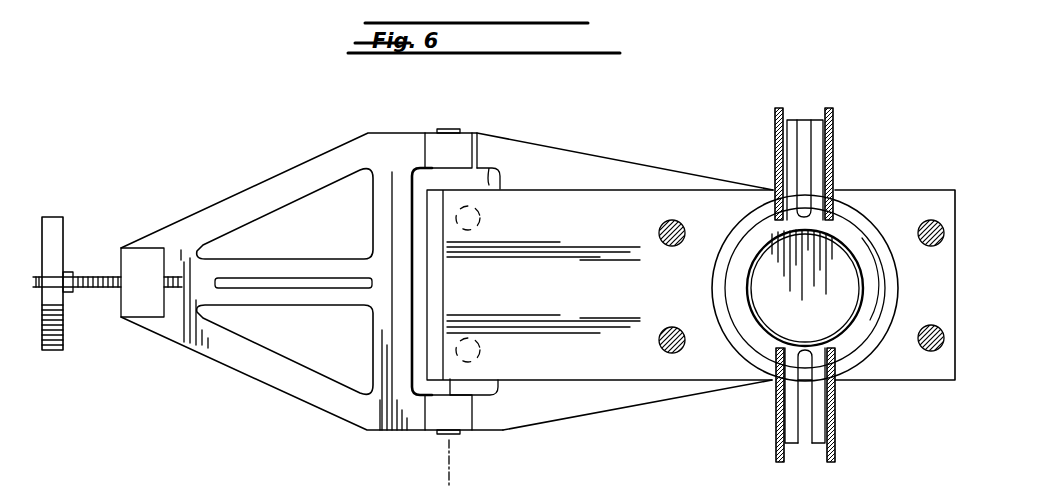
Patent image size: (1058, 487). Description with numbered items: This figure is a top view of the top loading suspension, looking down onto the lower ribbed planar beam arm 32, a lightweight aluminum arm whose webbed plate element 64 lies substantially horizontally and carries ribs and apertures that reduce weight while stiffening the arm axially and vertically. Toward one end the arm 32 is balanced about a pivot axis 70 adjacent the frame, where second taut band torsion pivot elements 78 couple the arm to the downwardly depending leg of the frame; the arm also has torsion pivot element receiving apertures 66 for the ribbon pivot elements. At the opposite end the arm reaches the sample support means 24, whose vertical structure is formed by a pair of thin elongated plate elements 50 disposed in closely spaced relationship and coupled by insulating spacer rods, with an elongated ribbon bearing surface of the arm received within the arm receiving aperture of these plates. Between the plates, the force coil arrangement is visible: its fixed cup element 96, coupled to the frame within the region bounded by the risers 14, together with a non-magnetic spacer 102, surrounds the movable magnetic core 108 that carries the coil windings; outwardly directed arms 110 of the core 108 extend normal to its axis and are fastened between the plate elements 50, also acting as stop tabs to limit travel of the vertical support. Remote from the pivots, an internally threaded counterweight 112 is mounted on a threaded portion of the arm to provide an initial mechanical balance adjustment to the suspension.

The risers 14 is at (931, 219).
The sample support means 24 is at (846, 175).
The lower ribbed planar beam arm 32 is at (632, 154).
The thin elongated plate elements 50 is at (830, 108).
The webbed plate elements 64 is at (294, 168).
The torsion pivot element receiving apertures 66 is at (488, 168).
The pivot axis 70 is at (449, 480).
The second taut band torsion pivot elements 78 is at (442, 180).
The cup elements 96 is at (753, 206).
The non-magnetic spacer 102 is at (782, 318).
The magnetic core 108 is at (847, 340).
The outwardly directed arms 110 is at (823, 163).
The counterweights 112 is at (63, 226).